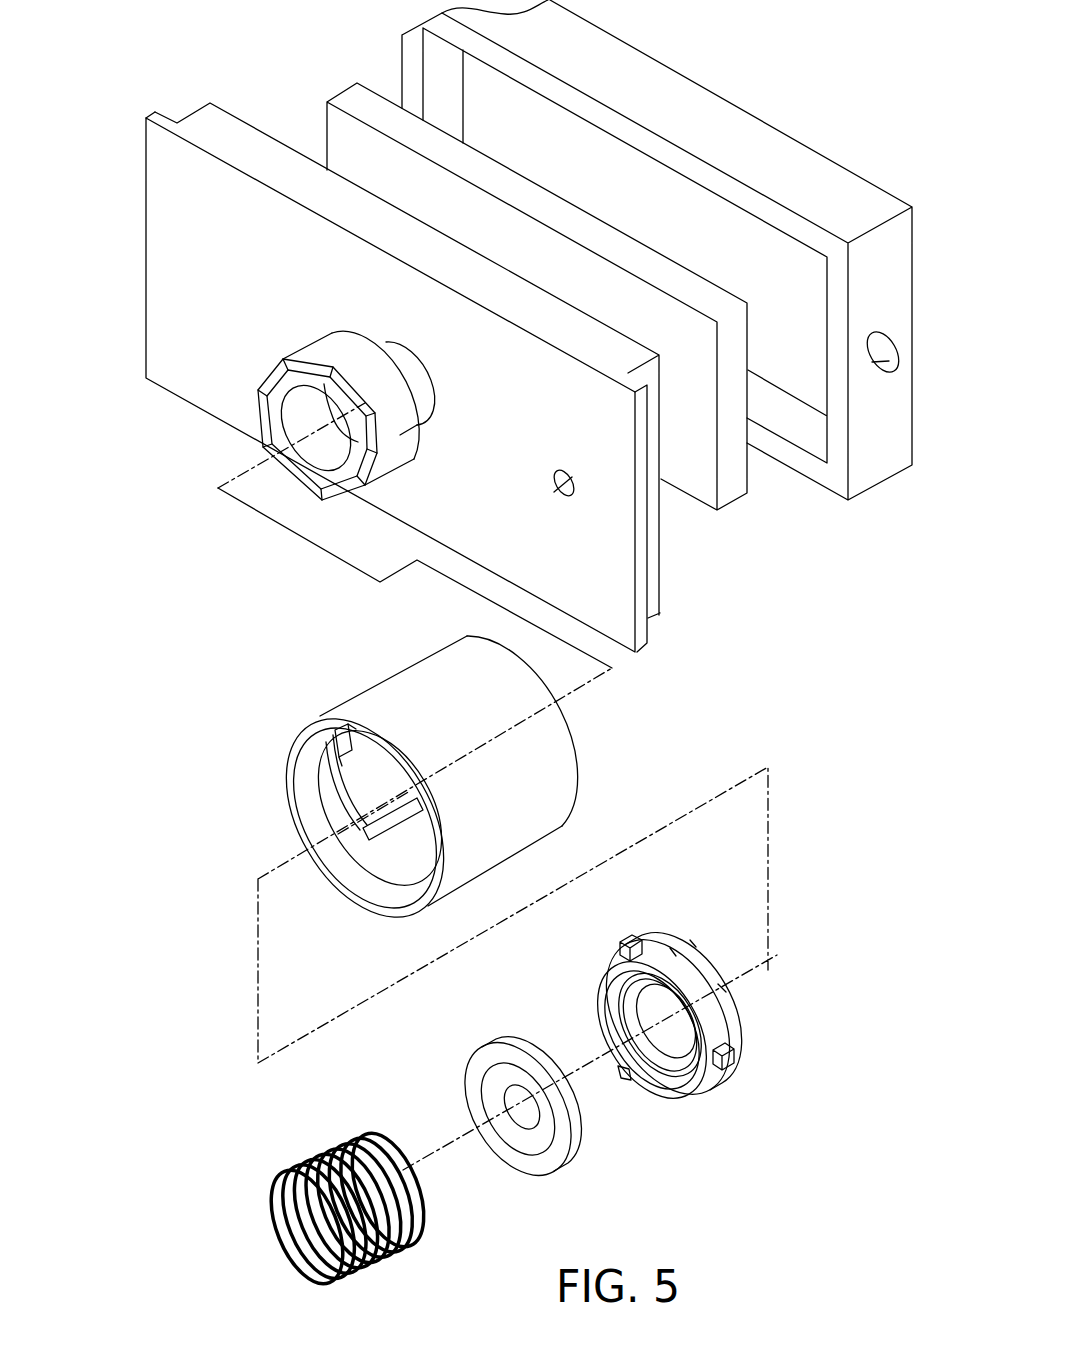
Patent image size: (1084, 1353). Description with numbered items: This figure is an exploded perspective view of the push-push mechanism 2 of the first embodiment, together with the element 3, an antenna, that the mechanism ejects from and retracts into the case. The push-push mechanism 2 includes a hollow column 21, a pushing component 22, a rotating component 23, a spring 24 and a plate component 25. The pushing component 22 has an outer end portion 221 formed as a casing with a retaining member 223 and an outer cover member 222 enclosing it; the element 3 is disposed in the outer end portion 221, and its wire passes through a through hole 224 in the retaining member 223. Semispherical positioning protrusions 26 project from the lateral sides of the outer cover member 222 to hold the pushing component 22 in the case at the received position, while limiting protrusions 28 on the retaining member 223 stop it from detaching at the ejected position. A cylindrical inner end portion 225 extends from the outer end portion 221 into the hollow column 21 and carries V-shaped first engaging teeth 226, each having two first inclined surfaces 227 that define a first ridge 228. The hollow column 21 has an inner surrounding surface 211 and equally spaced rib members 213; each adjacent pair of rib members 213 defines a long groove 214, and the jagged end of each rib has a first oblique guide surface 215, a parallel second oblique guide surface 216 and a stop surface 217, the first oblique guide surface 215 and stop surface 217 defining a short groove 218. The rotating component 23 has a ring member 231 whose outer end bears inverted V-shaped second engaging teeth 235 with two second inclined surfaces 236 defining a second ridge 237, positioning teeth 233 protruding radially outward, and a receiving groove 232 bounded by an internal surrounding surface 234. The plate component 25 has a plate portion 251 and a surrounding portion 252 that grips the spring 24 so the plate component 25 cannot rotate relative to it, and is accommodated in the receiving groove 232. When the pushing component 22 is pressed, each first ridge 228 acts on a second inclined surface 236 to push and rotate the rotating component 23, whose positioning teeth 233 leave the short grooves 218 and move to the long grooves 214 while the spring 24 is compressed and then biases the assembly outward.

The push-push mechanism 2 is at (200, 600).
The element 3 is at (733, 502).
The hollow column 21 is at (366, 669).
The inner surrounding surface 211 is at (318, 816).
The rib members 213 is at (351, 775).
The long groove 214 is at (366, 838).
The first oblique guide surface 215 is at (351, 794).
The second oblique guide surface 216 is at (345, 752).
The stop surface 217 is at (370, 773).
The short groove 218 is at (362, 748).
The pushing component 22 is at (160, 86).
The outer end portion 221 is at (336, 66).
The outer cover member 222 is at (727, 98).
The retaining member 223 is at (608, 567).
The through hole 224 is at (560, 492).
The inner end portion 225 is at (280, 346).
The first engaging teeth 226 is at (243, 417).
The first inclined surfaces 227 is at (265, 396).
The first ridge 228 is at (267, 444).
The rotating component 23 is at (748, 1015).
The ring member 231 is at (710, 1020).
The receiving groove 232 is at (612, 1000).
The positioning teeth 233 is at (620, 946).
The internal surrounding surface 234 is at (660, 1085).
The second engaging teeth 235 is at (733, 995).
The second inclined surfaces 236 is at (693, 943).
The second ridge 237 is at (722, 990).
The spring 24 is at (380, 1235).
The plate component 25 is at (465, 1043).
The plate portion 251 is at (515, 1128).
The surrounding portion 252 is at (523, 1150).
The positioning protrusion 26 is at (883, 374).
The limiting protrusions 28 is at (146, 238).